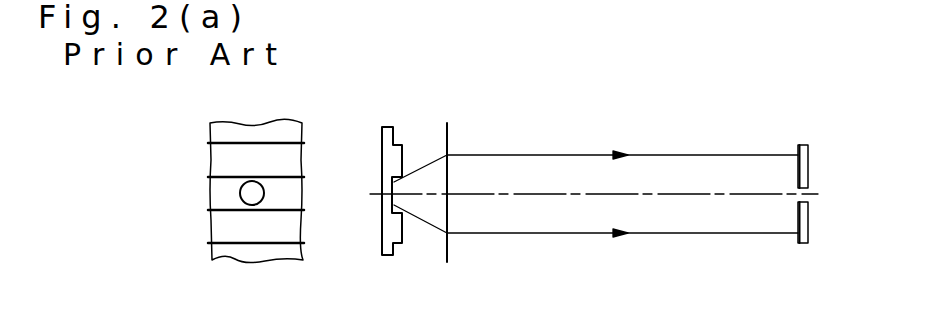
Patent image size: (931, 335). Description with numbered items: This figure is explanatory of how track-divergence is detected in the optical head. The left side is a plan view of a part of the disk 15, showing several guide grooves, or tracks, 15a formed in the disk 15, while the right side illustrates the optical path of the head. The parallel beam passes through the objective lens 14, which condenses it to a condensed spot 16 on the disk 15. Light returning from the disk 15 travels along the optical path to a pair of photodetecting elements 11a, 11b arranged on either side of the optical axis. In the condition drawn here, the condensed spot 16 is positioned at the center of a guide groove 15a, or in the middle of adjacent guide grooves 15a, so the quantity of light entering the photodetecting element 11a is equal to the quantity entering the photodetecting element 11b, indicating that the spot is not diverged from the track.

The photodetecting element 11a is at (802, 143).
The photodetecting element 11b is at (802, 245).
The objective lens 14 is at (448, 138).
The disk 15 is at (292, 123).
The guide groove 15a is at (216, 134).
The condensed spot 16 is at (260, 193).